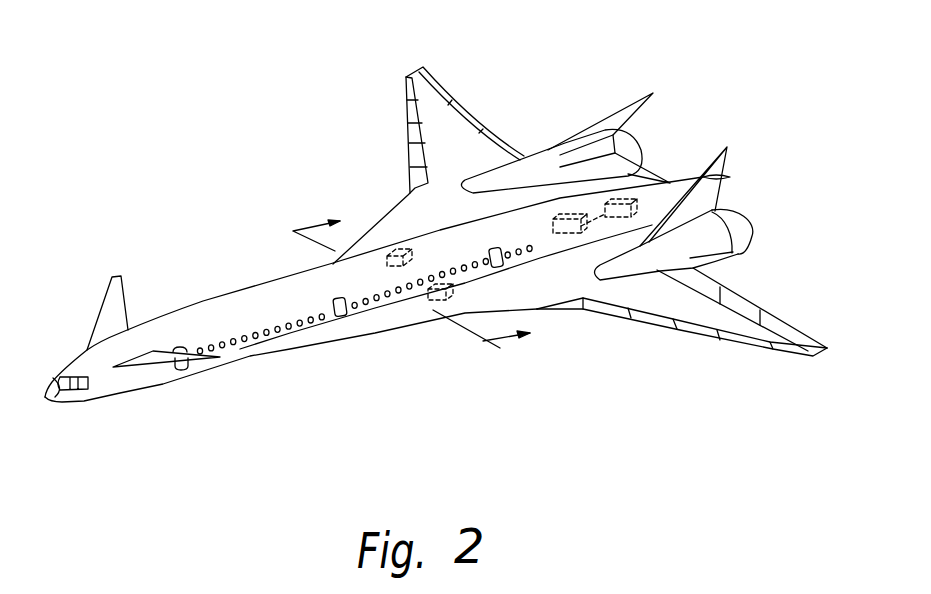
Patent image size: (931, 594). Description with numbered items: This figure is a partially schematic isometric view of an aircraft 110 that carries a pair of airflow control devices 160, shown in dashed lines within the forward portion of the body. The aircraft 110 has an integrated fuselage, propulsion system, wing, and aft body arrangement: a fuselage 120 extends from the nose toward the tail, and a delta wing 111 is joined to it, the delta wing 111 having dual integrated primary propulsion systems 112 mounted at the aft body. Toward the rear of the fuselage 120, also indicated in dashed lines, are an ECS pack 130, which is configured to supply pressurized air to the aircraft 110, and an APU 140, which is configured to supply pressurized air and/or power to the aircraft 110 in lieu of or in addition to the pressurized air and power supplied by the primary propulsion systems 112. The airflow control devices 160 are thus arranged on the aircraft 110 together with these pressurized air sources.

The aircraft 110 is at (459, 245).
The delta wing 111 is at (563, 310).
The primary propulsion systems 112 is at (565, 125).
The fuselage 120 is at (210, 300).
The ECS pack 130 is at (563, 218).
The APU 140 is at (630, 200).
The airflow control devices 160 is at (388, 266).